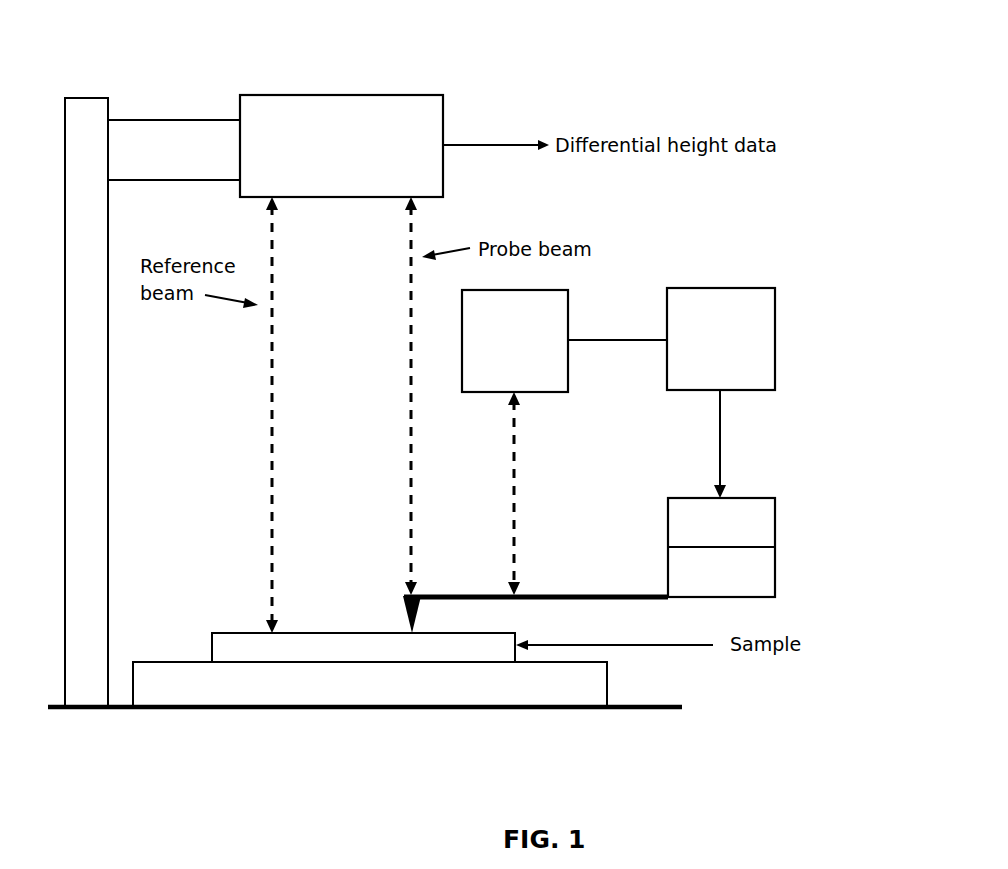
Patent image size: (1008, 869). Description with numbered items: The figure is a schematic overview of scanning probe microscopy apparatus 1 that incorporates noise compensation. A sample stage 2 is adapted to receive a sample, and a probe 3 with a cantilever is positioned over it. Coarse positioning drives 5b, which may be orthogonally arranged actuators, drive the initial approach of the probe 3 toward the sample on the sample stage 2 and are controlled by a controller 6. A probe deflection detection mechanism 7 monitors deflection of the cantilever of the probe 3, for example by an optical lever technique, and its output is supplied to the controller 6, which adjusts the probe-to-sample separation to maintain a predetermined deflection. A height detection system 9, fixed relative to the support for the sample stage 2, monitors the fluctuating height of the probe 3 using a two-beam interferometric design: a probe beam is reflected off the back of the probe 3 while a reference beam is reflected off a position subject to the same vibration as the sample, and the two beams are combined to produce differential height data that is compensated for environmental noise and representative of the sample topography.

The scanning probe microscopy apparatus 1 is at (281, 68).
The sample stage 2 is at (618, 680).
The probe 3 is at (454, 578).
The coarse positioning drives 5b is at (708, 531).
The controller 6 is at (711, 347).
The probe deflection detection mechanism 7 is at (505, 349).
The height detection system 9 is at (332, 154).